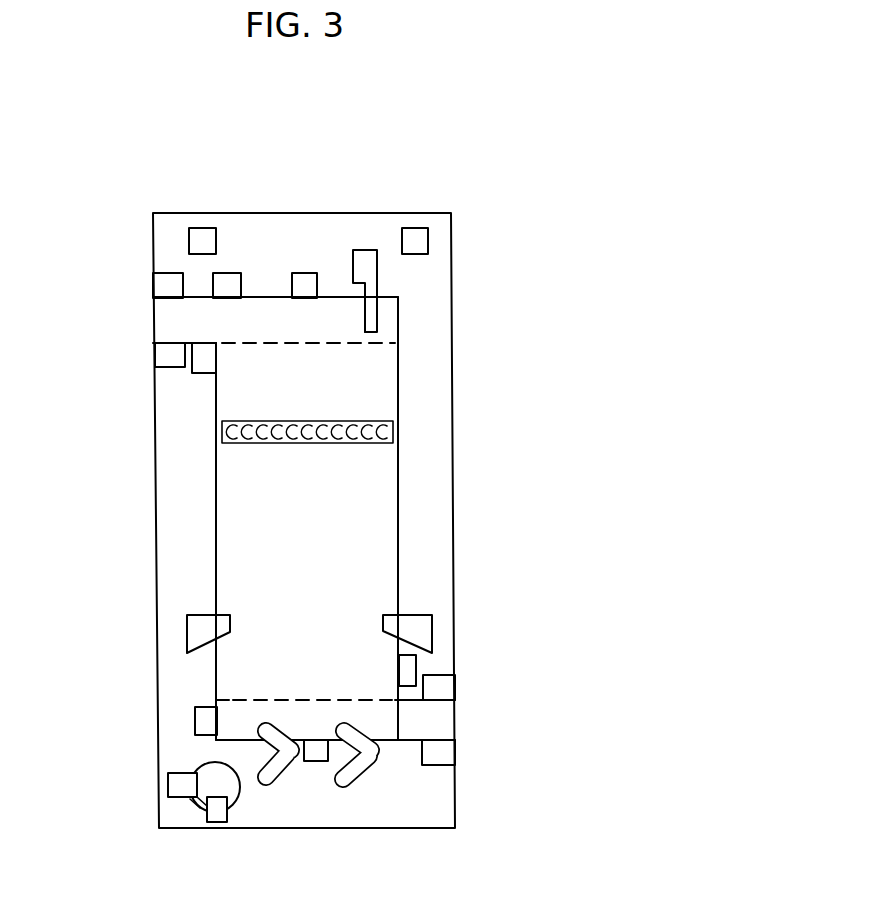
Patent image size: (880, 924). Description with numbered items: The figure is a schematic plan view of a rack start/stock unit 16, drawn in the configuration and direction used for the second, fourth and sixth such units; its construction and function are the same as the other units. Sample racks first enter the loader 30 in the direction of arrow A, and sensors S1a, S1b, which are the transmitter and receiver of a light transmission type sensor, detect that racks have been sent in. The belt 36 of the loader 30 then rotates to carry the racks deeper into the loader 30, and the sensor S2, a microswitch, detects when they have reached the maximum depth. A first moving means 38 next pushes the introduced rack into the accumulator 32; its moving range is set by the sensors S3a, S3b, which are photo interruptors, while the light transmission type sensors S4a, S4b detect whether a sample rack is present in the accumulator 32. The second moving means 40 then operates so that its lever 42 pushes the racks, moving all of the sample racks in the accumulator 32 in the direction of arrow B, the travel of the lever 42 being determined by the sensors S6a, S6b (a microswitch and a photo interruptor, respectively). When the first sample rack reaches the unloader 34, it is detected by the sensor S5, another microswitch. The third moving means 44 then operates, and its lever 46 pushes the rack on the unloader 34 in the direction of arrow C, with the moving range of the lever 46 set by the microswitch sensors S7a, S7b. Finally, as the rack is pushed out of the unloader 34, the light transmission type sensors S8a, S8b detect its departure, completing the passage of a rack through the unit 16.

The rack start/stock unit 16 is at (90, 149).
The loader 30 is at (380, 722).
The accumulator 32 is at (380, 502).
The unloader 34 is at (270, 312).
The belt 36 is at (407, 728).
The first moving means 38 is at (285, 777).
The second moving means 40 is at (322, 594).
The lever 42 is at (200, 622).
The third moving means 44 is at (400, 281).
The lever 46 is at (366, 325).
The arrow A direction A is at (478, 722).
The arrow B direction B is at (307, 490).
The arrow C direction C is at (130, 325).
The sensor S1a is at (443, 753).
The sensor S1b is at (440, 688).
The sensor S2 is at (203, 720).
The sensor S3a is at (183, 784).
The sensor S3b is at (218, 808).
The sensor S4a is at (320, 755).
The sensor S4b is at (313, 274).
The sensor S5 is at (238, 278).
The sensor S6a is at (408, 668).
The sensor S6b is at (203, 362).
The sensor S7a is at (418, 240).
The sensor S7b is at (202, 236).
The sensor S8a is at (168, 355).
The sensor S8b is at (160, 283).